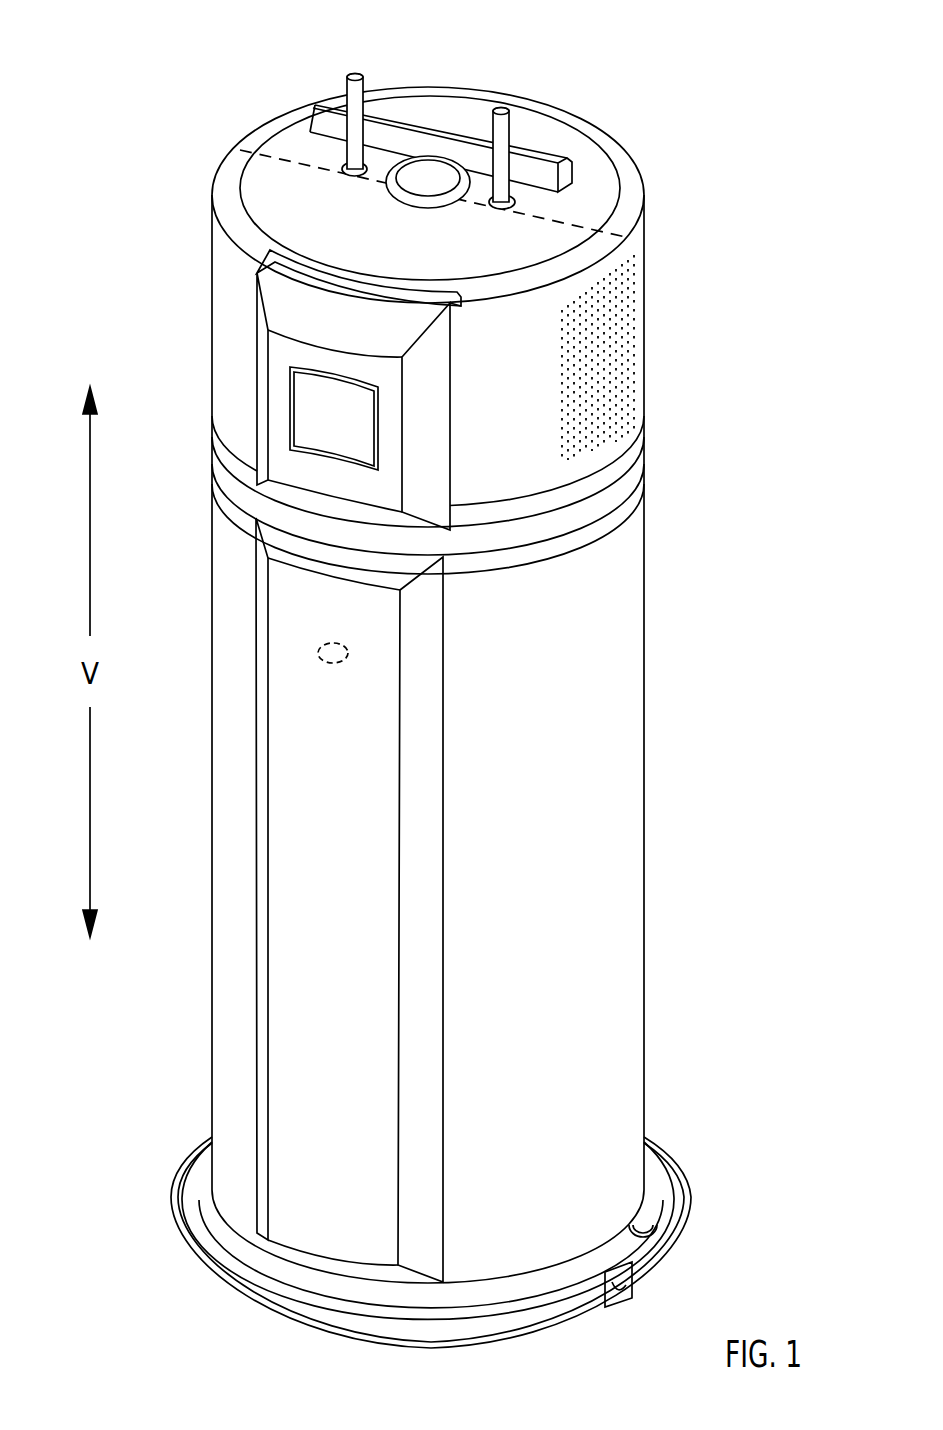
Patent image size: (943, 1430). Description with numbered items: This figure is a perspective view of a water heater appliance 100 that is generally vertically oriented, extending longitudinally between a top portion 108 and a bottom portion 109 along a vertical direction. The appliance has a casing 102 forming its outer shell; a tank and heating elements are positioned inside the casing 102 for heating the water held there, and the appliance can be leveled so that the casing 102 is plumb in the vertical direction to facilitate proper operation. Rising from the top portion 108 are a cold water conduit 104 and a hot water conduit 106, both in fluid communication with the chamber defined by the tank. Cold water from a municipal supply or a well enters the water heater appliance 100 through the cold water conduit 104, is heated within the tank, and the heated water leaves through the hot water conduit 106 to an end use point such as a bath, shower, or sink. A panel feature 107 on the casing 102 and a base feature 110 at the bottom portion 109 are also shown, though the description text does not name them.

The water heater appliance 100 is at (703, 178).
The casing 102 is at (625, 722).
The cold water conduit 104 is at (347, 82).
The hot water conduit 106 is at (509, 130).
The control panel display 107 is at (363, 430).
The top portion 108 is at (182, 200).
The bottom portion 109 is at (163, 1178).
The drain pan 110 is at (698, 1177).